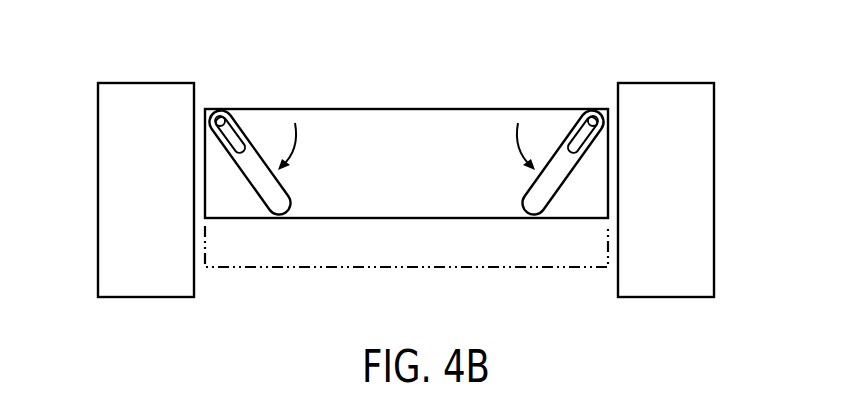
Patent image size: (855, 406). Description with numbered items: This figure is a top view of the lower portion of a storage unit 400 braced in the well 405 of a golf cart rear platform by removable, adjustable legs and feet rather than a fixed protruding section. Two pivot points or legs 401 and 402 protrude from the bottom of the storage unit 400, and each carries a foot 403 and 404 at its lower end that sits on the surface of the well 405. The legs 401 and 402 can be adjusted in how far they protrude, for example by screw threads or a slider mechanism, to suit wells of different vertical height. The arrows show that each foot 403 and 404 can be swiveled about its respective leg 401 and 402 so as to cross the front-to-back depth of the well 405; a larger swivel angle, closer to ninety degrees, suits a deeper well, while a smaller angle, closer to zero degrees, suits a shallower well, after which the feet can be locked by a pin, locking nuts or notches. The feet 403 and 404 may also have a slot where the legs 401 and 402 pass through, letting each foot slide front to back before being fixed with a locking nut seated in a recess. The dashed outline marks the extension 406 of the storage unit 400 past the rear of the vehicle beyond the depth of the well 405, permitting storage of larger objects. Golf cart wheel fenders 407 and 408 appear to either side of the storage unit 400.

The storage unit 400 is at (406, 123).
The leg 401 is at (224, 120).
The leg 402 is at (594, 120).
The foot 403 is at (275, 112).
The foot 404 is at (538, 112).
The well 405 is at (341, 118).
The extension 406 is at (316, 257).
The golf cart wheel fender 407 is at (98, 190).
The golf cart wheel fender 408 is at (714, 190).